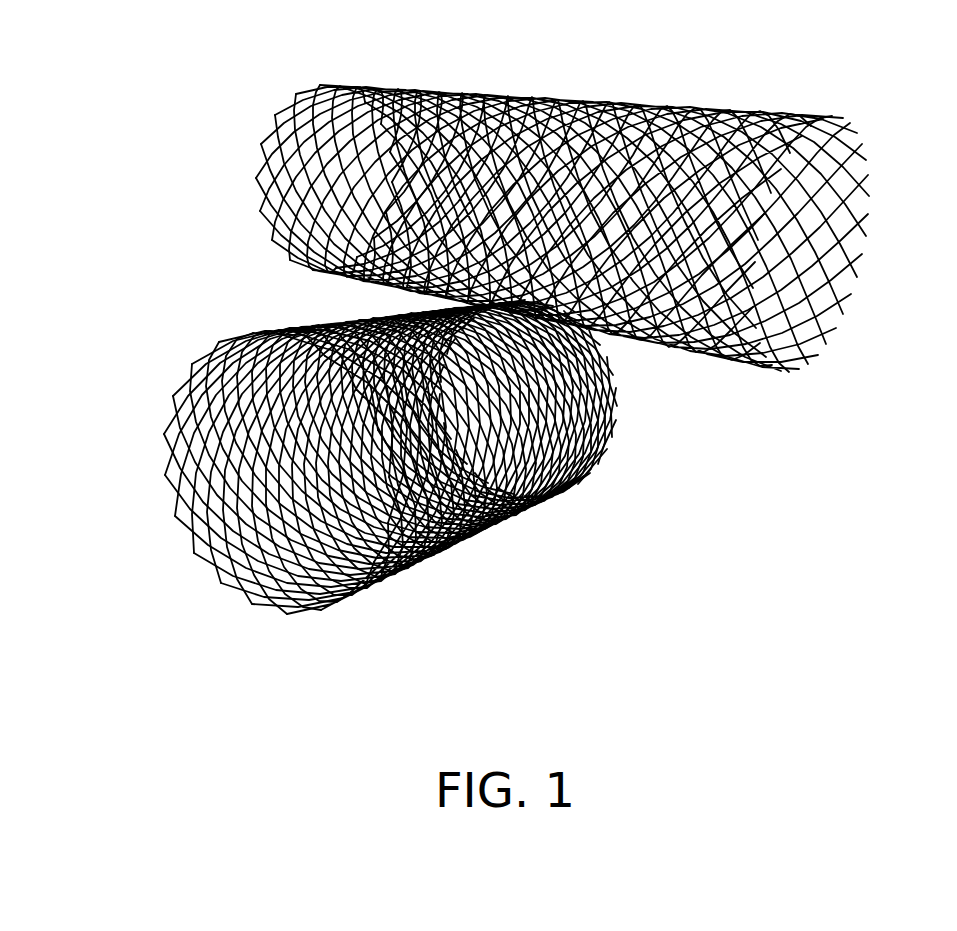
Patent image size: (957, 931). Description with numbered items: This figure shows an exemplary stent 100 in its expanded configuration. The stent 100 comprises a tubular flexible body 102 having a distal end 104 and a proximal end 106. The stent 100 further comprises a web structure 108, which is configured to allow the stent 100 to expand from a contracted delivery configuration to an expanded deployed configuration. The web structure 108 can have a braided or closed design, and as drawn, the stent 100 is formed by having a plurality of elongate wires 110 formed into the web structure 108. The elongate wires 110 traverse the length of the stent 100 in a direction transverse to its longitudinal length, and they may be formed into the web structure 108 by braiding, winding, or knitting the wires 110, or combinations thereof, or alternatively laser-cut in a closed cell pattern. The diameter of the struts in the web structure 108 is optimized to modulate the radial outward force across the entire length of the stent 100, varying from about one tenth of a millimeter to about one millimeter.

The stent 100 is at (524, 312).
The tubular flexible body 102 is at (518, 443).
The distal end 104 is at (360, 457).
The proximal end 106 is at (601, 201).
The web structure 108 is at (460, 82).
The elongate wires 110 is at (727, 110).